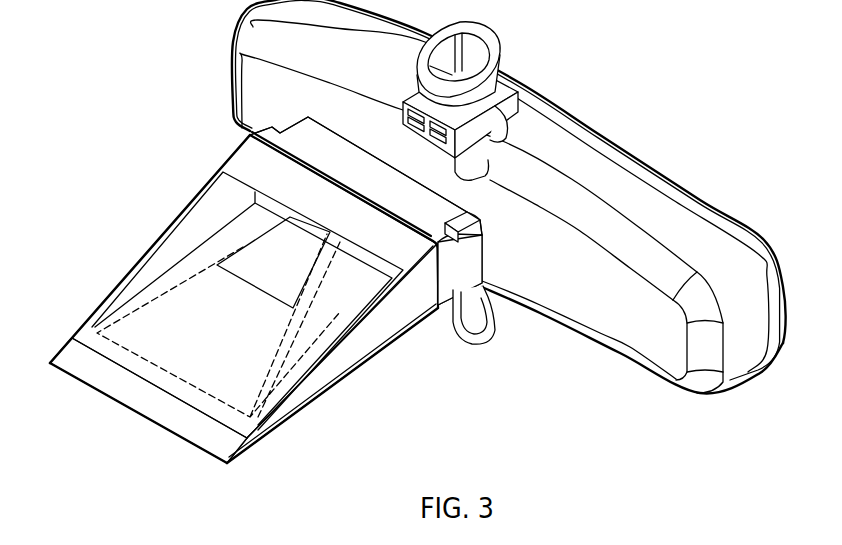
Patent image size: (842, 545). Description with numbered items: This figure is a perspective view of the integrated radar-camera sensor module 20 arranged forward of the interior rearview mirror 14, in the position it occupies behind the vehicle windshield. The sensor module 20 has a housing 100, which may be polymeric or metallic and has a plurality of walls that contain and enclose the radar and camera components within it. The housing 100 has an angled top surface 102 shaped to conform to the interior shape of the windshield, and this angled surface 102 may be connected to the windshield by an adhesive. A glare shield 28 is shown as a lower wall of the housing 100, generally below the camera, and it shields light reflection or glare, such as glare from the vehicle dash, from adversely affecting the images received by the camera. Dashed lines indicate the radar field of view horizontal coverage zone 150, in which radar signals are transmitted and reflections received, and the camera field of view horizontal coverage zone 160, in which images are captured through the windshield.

The interior rearview mirror 14 is at (606, 172).
The integrated radar-camera sensor module 20 is at (396, 398).
The glare shield 28 is at (117, 381).
The housing 100 is at (266, 312).
The angled top surface 102 is at (180, 222).
The radar field of view horizontal coverage zone 150 is at (225, 385).
The camera field of view horizontal coverage zone 160 is at (252, 285).